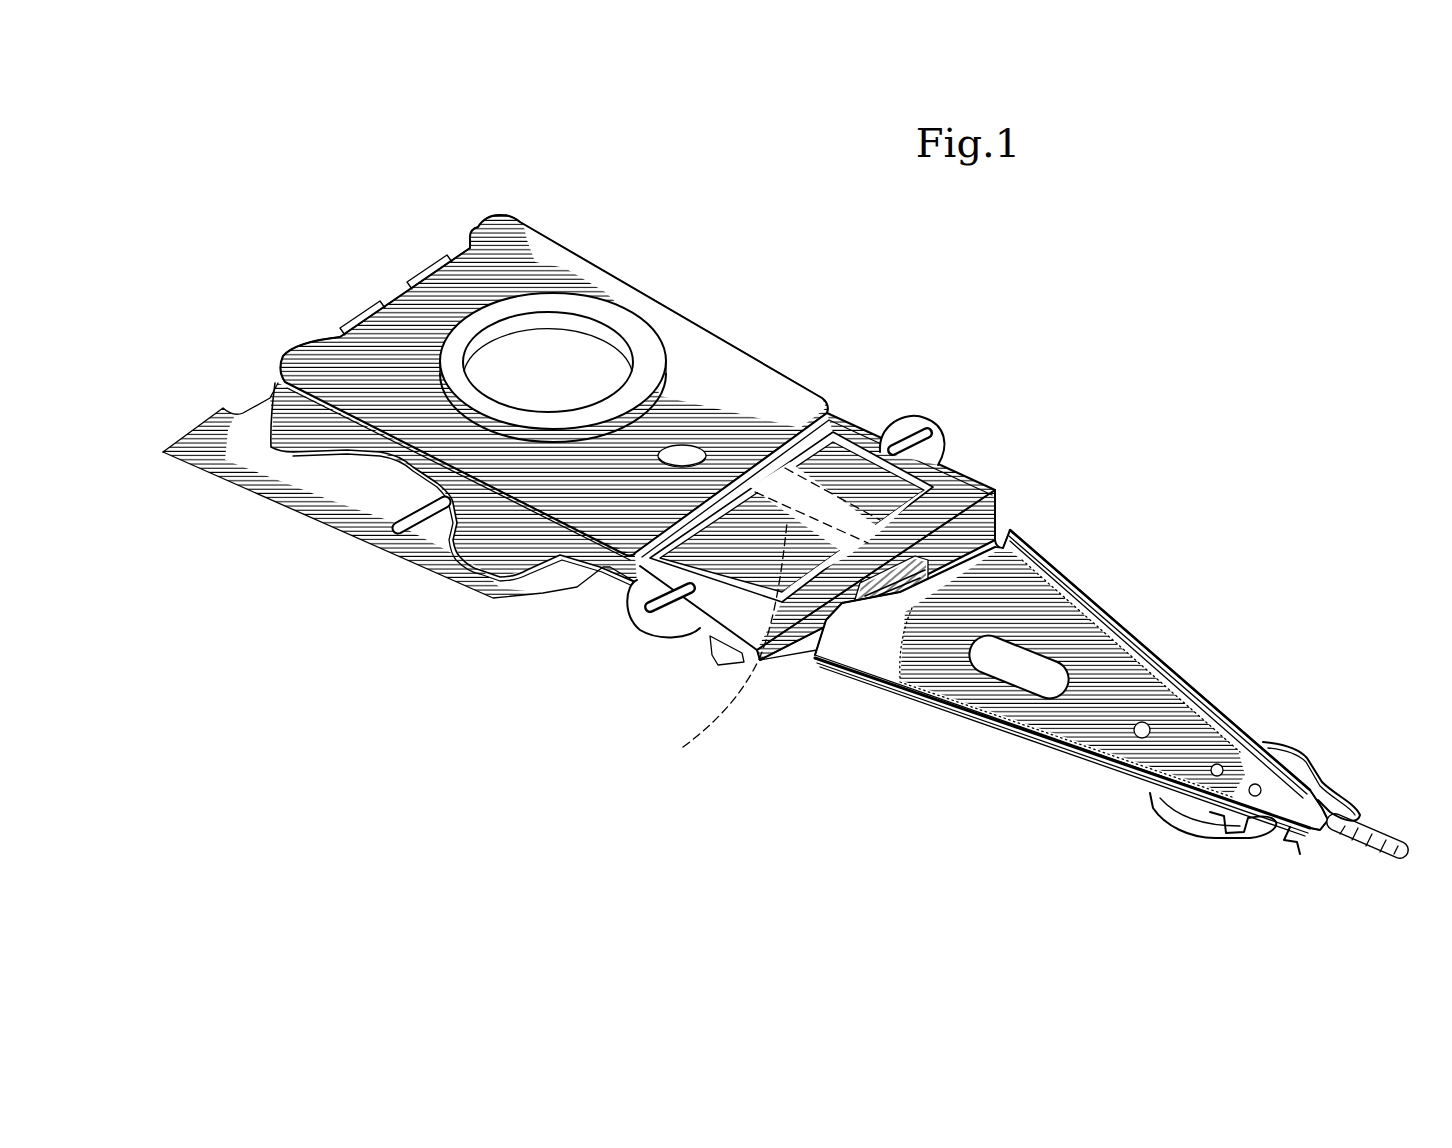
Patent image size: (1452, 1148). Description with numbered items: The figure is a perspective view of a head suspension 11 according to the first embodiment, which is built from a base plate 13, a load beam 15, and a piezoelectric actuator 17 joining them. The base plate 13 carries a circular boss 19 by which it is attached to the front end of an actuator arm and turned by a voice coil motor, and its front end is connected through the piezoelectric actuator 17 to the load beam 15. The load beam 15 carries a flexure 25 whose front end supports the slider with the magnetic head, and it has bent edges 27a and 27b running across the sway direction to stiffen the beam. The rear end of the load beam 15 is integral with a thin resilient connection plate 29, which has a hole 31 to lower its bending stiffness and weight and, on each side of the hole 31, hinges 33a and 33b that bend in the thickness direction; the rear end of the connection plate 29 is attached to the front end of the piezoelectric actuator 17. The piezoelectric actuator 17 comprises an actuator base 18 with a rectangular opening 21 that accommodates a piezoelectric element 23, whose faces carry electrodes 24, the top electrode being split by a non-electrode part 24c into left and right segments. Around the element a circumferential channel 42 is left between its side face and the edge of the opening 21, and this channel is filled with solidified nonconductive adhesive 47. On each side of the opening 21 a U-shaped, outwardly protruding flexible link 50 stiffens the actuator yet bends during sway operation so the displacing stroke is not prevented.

The head suspension 11 is at (1192, 247).
The base plate 13 is at (553, 369).
The load beam 15 is at (1107, 712).
The piezoelectric actuator 17 is at (1036, 362).
The actuator base 18 is at (970, 490).
The boss 19 is at (560, 325).
The opening 21 is at (873, 557).
The piezoelectric element 23 is at (850, 462).
The electrodes 24 is at (745, 598).
The non-electrode part 24c is at (711, 648).
The flexure 25 is at (1220, 813).
The bent edge 27a is at (1082, 592).
The bent edge 27b is at (992, 721).
The connection plate 29 is at (987, 527).
The hole 31 is at (807, 637).
The hinge 33a is at (1000, 537).
The hinge 33b is at (773, 637).
The circumferential channel 42 is at (930, 517).
The nonconductive adhesive 47 is at (803, 445).
The flexible link 50 is at (918, 425).